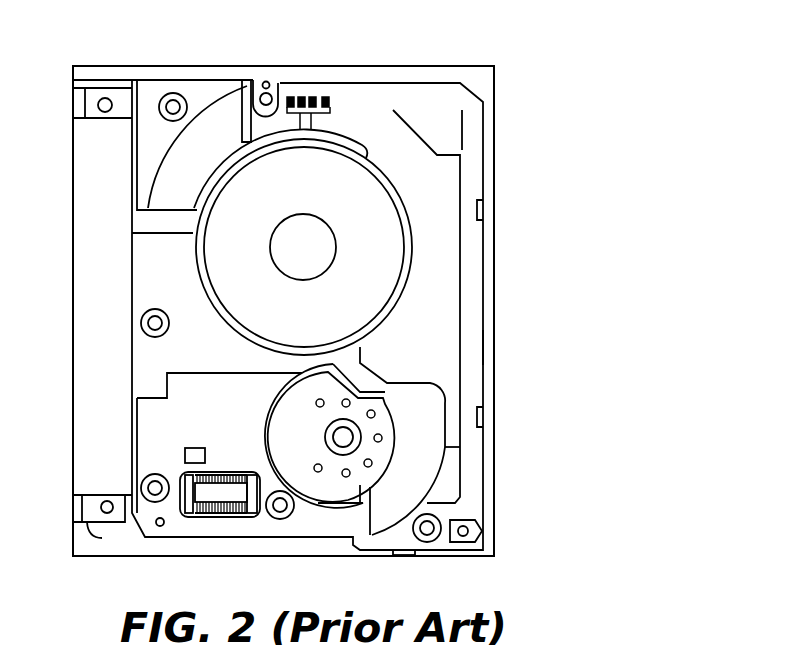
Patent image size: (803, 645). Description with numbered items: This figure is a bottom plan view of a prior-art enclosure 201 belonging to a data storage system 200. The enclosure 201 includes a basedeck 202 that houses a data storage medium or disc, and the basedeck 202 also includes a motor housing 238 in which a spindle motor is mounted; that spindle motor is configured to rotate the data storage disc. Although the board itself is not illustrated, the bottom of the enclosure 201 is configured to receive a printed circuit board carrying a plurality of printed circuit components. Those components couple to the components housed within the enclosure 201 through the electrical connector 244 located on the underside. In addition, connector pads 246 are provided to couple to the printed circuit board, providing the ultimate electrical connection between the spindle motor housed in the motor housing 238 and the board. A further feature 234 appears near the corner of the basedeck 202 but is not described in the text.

The data storage system 200 is at (556, 79).
The enclosure 201 is at (472, 62).
The basedeck 202 is at (488, 347).
The frame corner region 234 is at (461, 143).
The motor housing 238 is at (380, 241).
The electrical connector 244 is at (183, 520).
The connector pads 246 is at (312, 97).